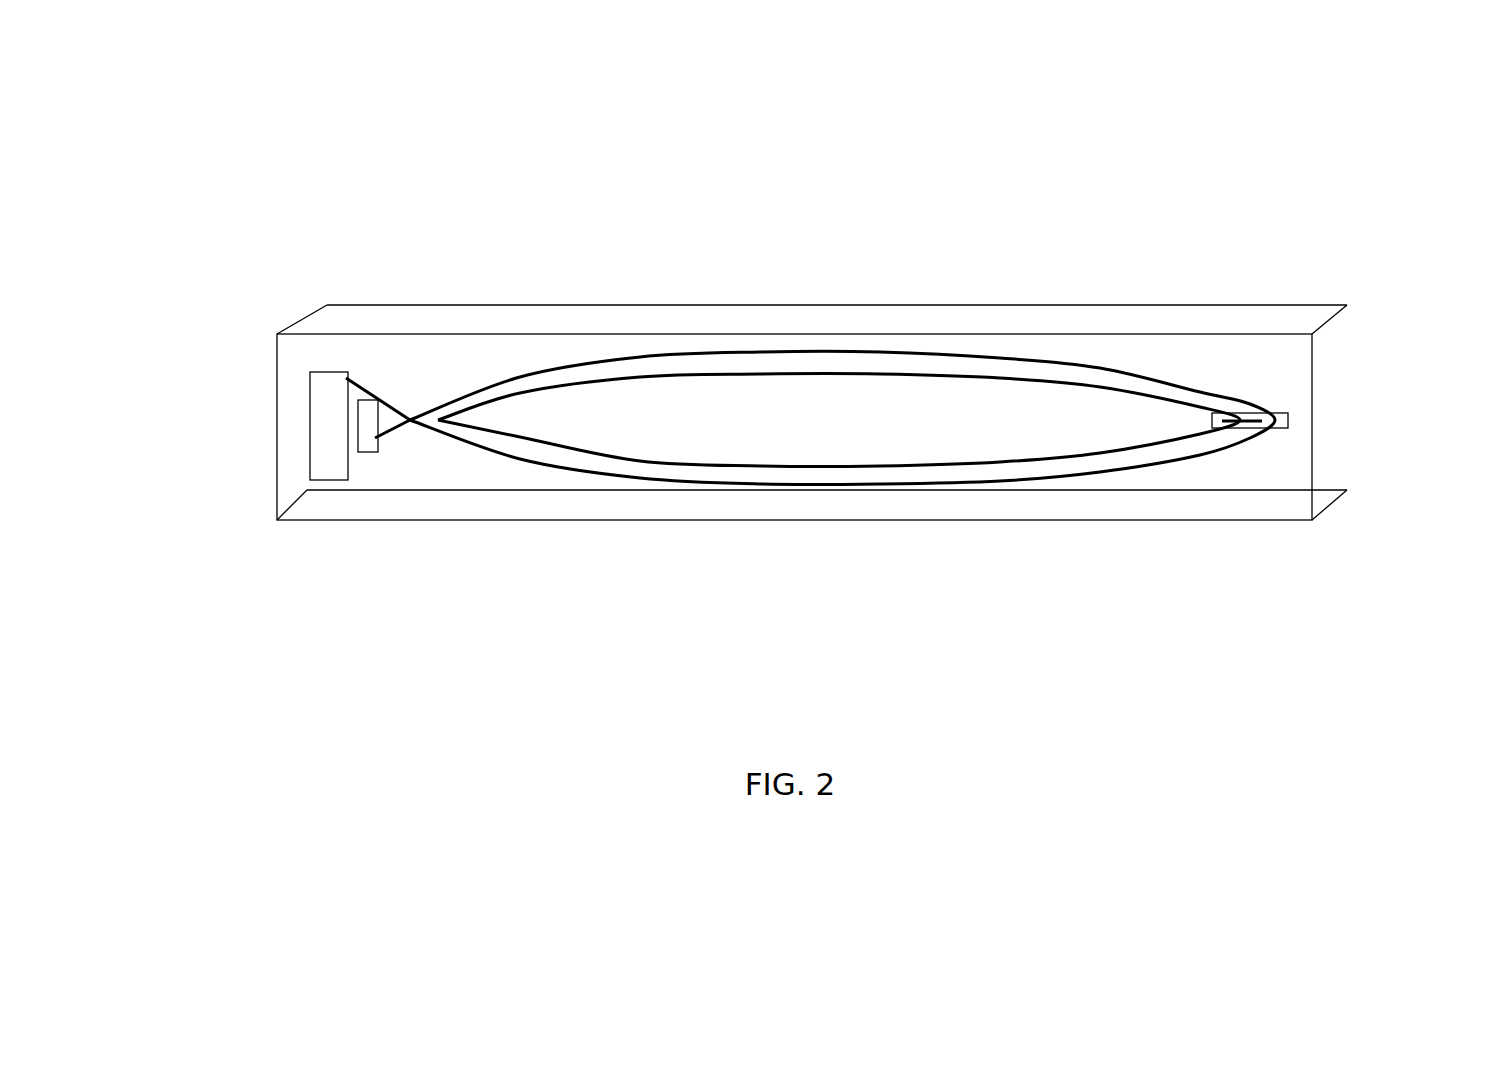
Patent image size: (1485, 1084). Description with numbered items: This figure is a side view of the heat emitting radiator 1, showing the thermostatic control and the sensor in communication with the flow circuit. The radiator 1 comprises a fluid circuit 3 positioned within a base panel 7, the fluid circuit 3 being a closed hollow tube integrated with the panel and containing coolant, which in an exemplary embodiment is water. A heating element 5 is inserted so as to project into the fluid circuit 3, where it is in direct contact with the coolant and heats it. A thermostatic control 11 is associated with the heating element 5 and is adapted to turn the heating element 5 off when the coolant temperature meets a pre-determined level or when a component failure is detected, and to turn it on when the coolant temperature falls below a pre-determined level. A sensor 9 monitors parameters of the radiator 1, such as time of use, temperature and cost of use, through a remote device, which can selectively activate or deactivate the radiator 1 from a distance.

The heat emitting radiator 1 is at (603, 252).
The fluid circuit 3 is at (493, 457).
The heating element 5 is at (1288, 425).
The base panel 7 is at (1060, 317).
The sensor 9 is at (367, 412).
The thermostatic control 11 is at (322, 435).